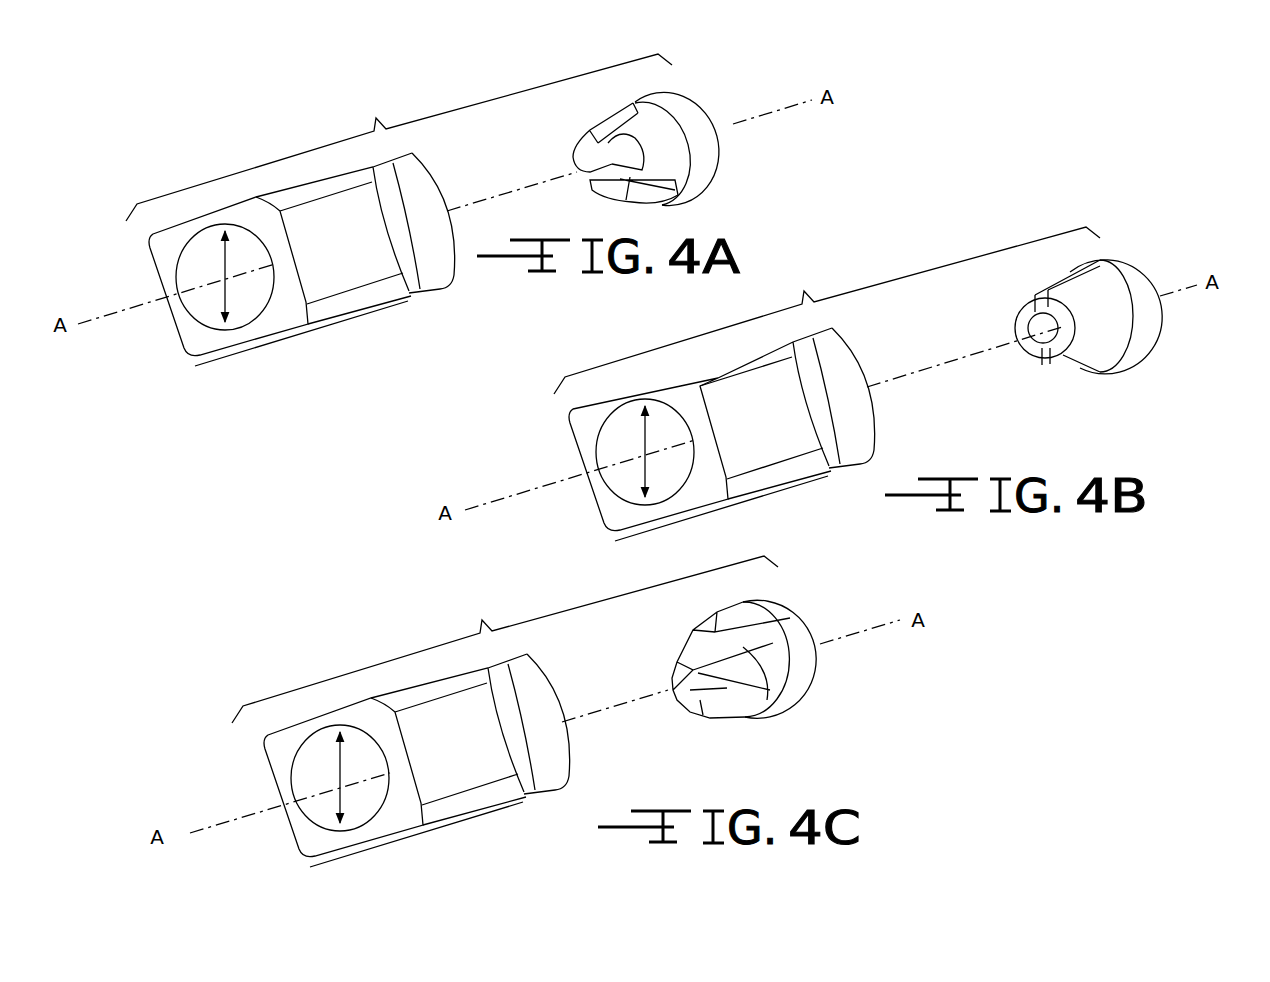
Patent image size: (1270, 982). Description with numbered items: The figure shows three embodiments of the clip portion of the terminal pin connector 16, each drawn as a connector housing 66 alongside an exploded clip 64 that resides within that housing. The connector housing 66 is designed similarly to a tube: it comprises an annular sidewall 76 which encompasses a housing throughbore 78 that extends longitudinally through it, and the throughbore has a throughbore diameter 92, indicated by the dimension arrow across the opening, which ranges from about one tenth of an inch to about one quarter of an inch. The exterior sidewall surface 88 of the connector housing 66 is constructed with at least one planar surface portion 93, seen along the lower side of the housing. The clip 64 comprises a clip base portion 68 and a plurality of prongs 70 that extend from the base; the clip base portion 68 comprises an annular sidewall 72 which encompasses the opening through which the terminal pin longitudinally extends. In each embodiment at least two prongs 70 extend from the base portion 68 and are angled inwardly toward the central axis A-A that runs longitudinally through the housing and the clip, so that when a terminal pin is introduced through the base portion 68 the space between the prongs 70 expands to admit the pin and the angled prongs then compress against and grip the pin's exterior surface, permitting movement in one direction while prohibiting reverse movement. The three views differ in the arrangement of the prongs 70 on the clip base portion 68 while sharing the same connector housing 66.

In FIG. 4A, the terminal pin connector 16 is at (399, 137).
In FIG. 4B, the terminal pin connector 16 is at (827, 310).
In FIG. 4C, the terminal pin connector 16 is at (505, 639).
In FIG. 4A, the clip 64 is at (736, 134).
In FIG. 4B, the clip 64 is at (1154, 360).
In FIG. 4C, the clip 64 is at (823, 680).
In FIG. 4A, the connector housing 66 is at (325, 345).
In FIG. 4B, the connector housing 66 is at (557, 468).
In FIG. 4C, the connector housing 66 is at (473, 840).
In FIG. 4A, the clip base portion 68 is at (690, 103).
In FIG. 4B, the clip base portion 68 is at (1143, 278).
In FIG. 4C, the clip base portion 68 is at (785, 628).
In FIG. 4A, the prongs 70 is at (648, 138).
In FIG. 4B, the prongs 70 is at (1090, 357).
In FIG. 4C, the prongs 70 is at (743, 707).
In FIG. 4A, the annular sidewall 72 is at (707, 168).
In FIG. 4B, the annular sidewall 72 is at (1110, 260).
In FIG. 4C, the annular sidewall 72 is at (797, 693).
In FIG. 4A, the annular sidewall 76 is at (273, 313).
In FIG. 4B, the annular sidewall 76 is at (708, 482).
In FIG. 4C, the annular sidewall 76 is at (300, 835).
In FIG. 4A, the housing throughbore 78 is at (206, 310).
In FIG. 4B, the housing throughbore 78 is at (609, 449).
In FIG. 4C, the housing throughbore 78 is at (312, 787).
In FIG. 4A, the exterior sidewall surface 88 is at (365, 250).
In FIG. 4B, the exterior sidewall surface 88 is at (798, 433).
In FIG. 4C, the exterior sidewall surface 88 is at (471, 765).
In FIG. 4A, the throughbore diameter 92 is at (222, 268).
In FIG. 4B, the throughbore diameter 92 is at (645, 448).
In FIG. 4C, the throughbore diameter 92 is at (342, 778).
In FIG. 4A, the planar surface portion 93 is at (350, 325).
In FIG. 4B, the planar surface portion 93 is at (707, 512).
In FIG. 4C, the planar surface portion 93 is at (440, 842).